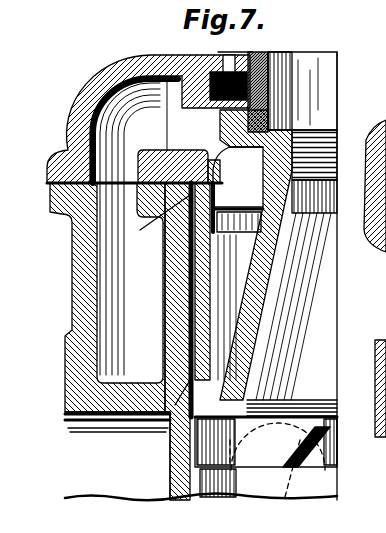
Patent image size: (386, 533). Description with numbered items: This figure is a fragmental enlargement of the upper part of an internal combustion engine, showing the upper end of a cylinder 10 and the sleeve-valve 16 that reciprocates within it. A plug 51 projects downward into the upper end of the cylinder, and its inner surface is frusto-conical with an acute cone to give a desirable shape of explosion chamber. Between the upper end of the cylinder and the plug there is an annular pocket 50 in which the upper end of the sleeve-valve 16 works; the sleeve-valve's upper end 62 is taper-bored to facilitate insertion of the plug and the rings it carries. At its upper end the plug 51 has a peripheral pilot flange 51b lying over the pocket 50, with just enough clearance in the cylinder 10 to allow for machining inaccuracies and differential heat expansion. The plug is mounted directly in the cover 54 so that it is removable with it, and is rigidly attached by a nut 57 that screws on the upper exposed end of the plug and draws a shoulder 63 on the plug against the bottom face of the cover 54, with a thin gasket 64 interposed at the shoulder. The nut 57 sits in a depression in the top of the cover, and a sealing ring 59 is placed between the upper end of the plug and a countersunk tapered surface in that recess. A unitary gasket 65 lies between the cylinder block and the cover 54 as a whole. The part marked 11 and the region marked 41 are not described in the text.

The cylinder 10 is at (178, 276).
The base 11 is at (335, 492).
The sleeve-valve 16 is at (165, 419).
The chamber 41 is at (117, 456).
The annular pocket 50 is at (192, 244).
The plug 51 is at (222, 198).
The peripheral pilot flange 51b is at (230, 219).
The cover 54 is at (125, 66).
The nut 57 is at (255, 52).
The sealing ring 59 is at (262, 88).
The upper end of the sleeve-valve 62 is at (167, 353).
The shoulder 63 is at (182, 219).
The gasket 64 is at (191, 152).
The gasket 65 is at (66, 160).